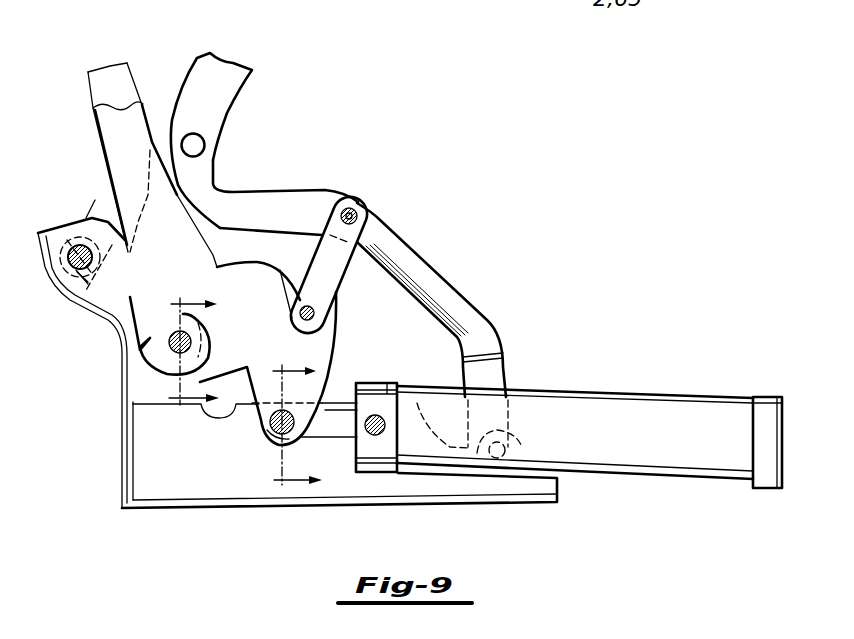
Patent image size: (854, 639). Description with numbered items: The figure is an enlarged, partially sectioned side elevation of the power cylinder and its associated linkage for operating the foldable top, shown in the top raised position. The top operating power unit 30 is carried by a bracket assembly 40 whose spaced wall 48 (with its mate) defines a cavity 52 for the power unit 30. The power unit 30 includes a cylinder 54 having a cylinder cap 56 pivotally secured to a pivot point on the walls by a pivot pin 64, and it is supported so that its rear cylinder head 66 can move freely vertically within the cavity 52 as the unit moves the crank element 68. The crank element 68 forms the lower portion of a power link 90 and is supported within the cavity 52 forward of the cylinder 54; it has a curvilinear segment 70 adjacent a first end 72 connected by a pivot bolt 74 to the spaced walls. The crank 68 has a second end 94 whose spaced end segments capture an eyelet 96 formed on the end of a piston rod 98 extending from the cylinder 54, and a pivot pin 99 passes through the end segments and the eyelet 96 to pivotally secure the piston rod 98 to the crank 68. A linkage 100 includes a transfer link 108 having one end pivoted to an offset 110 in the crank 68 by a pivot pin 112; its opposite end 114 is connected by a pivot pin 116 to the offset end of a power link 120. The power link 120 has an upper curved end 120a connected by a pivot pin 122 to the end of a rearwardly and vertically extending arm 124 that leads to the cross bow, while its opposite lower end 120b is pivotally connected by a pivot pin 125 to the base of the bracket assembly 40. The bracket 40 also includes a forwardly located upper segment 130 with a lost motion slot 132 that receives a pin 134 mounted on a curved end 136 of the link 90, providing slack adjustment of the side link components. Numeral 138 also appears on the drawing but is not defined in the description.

The top operating power unit 30 is at (712, 382).
The bracket assembly 40 is at (110, 503).
The spaced wall 48 is at (340, 405).
The cavity 52 is at (172, 486).
The cylinder 54 is at (633, 407).
The cylinder cap 56 is at (393, 383).
The pivot pin 64 is at (382, 436).
The rear cylinder head 66 is at (780, 420).
The crank element 68 is at (328, 348).
The curvilinear segment 70 is at (248, 263).
The first end 72 is at (173, 378).
The pivot bolt 74 is at (177, 345).
The power link 90 is at (123, 118).
The second end 94 is at (264, 415).
The eyelet 96 is at (268, 440).
The piston rod 98 is at (347, 440).
The pivot pin 99 is at (275, 440).
The linkage 100 is at (470, 260).
The transfer link 108 is at (337, 294).
The offset 110 is at (278, 291).
The pivot pin 112 is at (293, 322).
The opposite end 114 is at (357, 200).
The pivot pin 116 is at (360, 217).
The power link 120 is at (300, 200).
The upper curved end 120a is at (220, 183).
The lower end 120b is at (512, 430).
The pivot pin 122 is at (198, 142).
The arm 124 is at (200, 67).
The pivot pin 125 is at (527, 448).
The upper segment 130 is at (105, 303).
The lost motion slot 132 is at (120, 250).
The pin 134 is at (78, 260).
The curved end 136 is at (96, 220).
The arm extension 138 is at (100, 88).